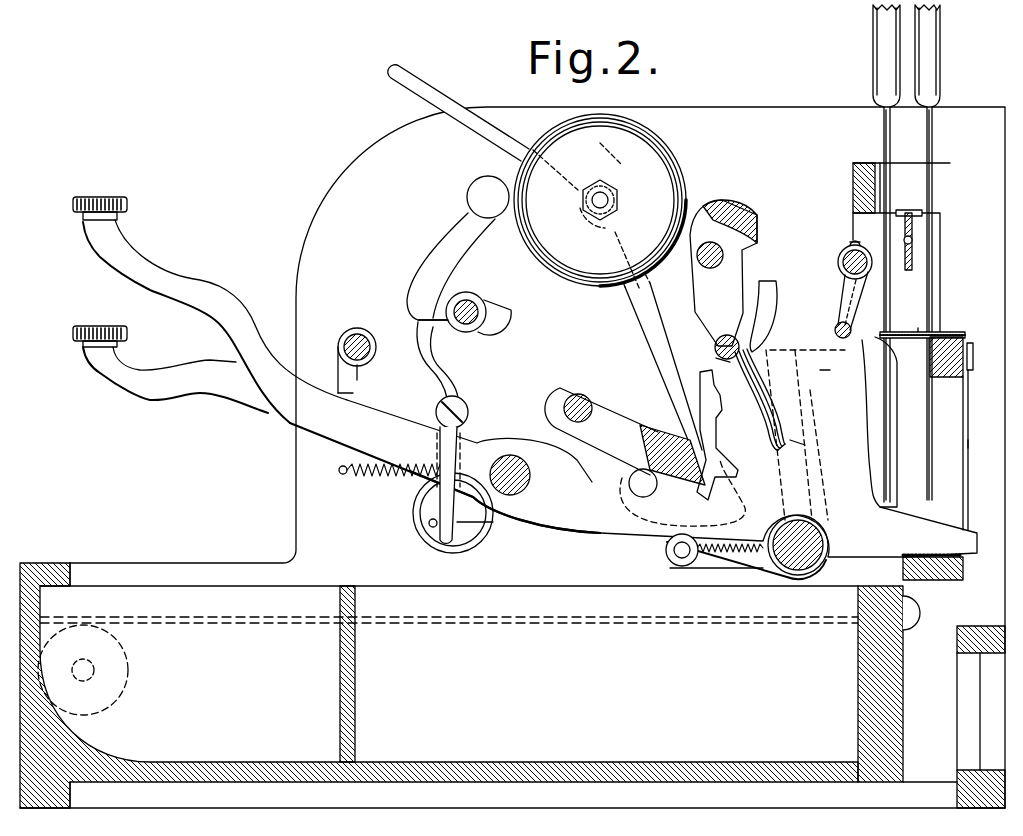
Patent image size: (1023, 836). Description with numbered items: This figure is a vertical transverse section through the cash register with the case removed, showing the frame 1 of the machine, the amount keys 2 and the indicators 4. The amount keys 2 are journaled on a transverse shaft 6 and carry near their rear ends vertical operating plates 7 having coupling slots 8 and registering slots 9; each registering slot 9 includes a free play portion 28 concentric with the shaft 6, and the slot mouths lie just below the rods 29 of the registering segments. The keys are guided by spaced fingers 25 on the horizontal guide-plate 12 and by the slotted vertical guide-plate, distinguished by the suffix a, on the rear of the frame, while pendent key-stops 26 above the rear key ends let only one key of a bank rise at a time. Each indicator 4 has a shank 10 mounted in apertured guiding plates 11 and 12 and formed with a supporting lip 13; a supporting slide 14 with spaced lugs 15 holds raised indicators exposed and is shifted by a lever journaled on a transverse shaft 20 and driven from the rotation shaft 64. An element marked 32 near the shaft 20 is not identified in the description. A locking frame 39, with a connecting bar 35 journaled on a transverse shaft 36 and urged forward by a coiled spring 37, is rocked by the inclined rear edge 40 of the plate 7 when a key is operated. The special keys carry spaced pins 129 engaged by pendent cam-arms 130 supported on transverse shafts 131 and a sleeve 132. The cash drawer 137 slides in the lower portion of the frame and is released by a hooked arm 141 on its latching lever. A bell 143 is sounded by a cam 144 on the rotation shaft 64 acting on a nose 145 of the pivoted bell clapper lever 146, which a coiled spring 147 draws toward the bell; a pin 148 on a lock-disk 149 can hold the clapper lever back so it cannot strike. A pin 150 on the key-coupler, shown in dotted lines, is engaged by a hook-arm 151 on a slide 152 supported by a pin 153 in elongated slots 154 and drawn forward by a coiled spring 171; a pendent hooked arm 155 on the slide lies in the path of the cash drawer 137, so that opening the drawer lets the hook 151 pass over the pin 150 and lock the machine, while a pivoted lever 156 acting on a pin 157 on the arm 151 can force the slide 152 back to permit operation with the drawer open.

The frame 1 is at (338, 533).
The amount keys 2 is at (210, 300).
The indicators 4 is at (873, 82).
The transverse shaft 6 is at (530, 480).
The operating plate 7 is at (871, 458).
The coupling slot 8 is at (720, 480).
The registering slot 9 is at (767, 399).
The shank 10 is at (884, 196).
The guiding plate 11 is at (950, 163).
The guiding plate 12 is at (935, 334).
The supporting lip 13 is at (918, 330).
The supporting slide 14 is at (889, 282).
The supporting lug 15 is at (913, 214).
The transverse shaft 20 is at (710, 268).
The fingers 25 is at (830, 373).
The key-stops 26 is at (965, 408).
The free play portion 28 is at (808, 434).
The rod 29 is at (715, 344).
The hatched segment 32 is at (770, 218).
The connecting bar 35 is at (836, 326).
The transverse shaft 36 is at (840, 256).
The coiled spring 37 is at (850, 244).
The locking frame 39 is at (850, 240).
The inclined rear edge 40 is at (852, 342).
The rotation shaft 64 is at (475, 302).
The spaced pins 129 is at (808, 462).
The cam-arm 130 is at (355, 401).
The transverse shaft 131 is at (362, 338).
The sleeve 132 is at (352, 372).
The cash drawer 137 is at (512, 685).
The hooked arm 141 is at (590, 392).
The bell 143 is at (672, 183).
The cam 144 is at (508, 322).
The nose 145 is at (432, 335).
The bell clapper lever 146 is at (400, 285).
The coiled spring 147 is at (395, 501).
The pin 148 is at (430, 527).
The lock-disk 149 is at (485, 533).
The pin 150 is at (640, 435).
The hook-arm 151 is at (598, 399).
The slide 152 is at (751, 553).
The pin 153 is at (672, 552).
The elongated slots 154 is at (820, 600).
The pendent hooked arm 155 is at (920, 605).
The pivoted lever 156 is at (482, 133).
The pin 157 is at (718, 360).
The coiled spring 171 is at (690, 524).
The vertical guide-plate suffix a is at (983, 438).